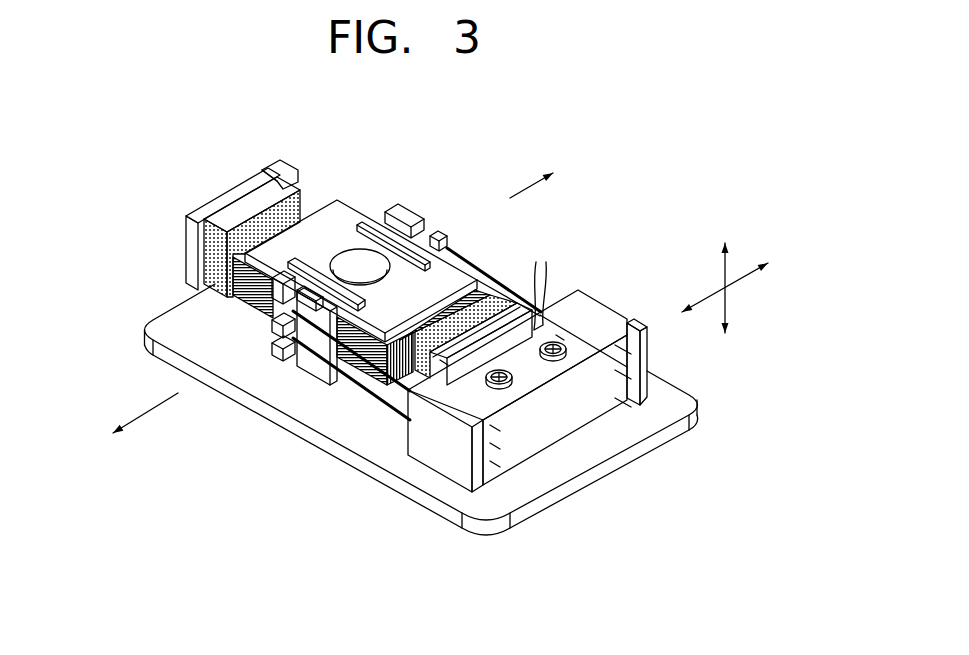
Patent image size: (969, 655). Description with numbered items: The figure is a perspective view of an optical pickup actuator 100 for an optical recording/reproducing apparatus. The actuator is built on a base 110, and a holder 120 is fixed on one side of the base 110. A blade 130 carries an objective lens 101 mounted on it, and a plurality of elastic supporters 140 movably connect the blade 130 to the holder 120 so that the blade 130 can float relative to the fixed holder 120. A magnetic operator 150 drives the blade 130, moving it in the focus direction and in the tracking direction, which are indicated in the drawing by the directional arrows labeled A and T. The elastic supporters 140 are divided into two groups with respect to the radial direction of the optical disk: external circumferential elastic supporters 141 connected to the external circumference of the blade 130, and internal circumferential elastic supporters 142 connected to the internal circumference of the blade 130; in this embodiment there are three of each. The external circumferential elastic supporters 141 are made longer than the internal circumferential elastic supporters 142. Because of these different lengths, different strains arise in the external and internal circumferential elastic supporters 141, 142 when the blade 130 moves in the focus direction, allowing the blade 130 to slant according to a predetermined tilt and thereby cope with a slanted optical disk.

The optical pickup actuator 100 is at (325, 458).
The objective lens 101 is at (360, 257).
The base 110 is at (423, 502).
The holder 120 is at (603, 315).
The blade 130 is at (361, 243).
The elastic supporters 140 is at (467, 248).
The external circumferential elastic supporters 141 is at (325, 330).
The internal circumferential elastic supporters 142 is at (546, 262).
The magnetic operator 150 is at (200, 186).